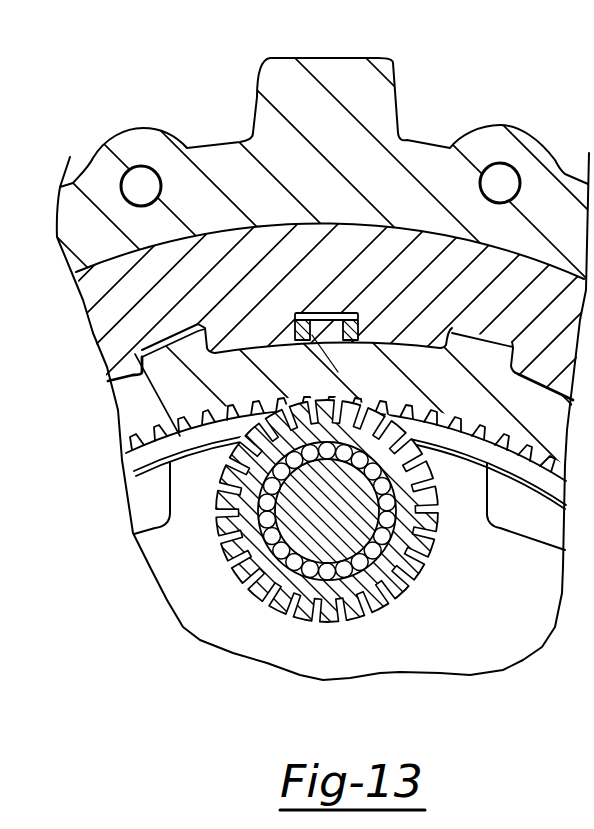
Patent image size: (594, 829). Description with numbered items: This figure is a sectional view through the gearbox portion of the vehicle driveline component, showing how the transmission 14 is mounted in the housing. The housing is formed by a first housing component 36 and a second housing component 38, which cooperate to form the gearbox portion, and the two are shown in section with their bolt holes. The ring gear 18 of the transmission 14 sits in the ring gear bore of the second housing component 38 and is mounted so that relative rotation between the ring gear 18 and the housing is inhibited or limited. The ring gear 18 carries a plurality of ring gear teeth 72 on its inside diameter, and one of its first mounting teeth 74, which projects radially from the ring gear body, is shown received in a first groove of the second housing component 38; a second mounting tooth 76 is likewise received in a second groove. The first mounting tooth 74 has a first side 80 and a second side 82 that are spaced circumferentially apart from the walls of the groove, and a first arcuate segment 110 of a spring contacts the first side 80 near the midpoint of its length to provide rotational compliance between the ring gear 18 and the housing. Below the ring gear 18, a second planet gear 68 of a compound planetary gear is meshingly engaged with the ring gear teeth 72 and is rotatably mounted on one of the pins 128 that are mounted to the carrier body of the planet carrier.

The transmission 14 is at (424, 627).
The ring gear 18 is at (140, 404).
The first housing component 36 is at (222, 168).
The second housing component 38 is at (113, 313).
The second planet gear 68 is at (288, 582).
The ring gear teeth 72 is at (557, 462).
The first mounting teeth 74 is at (328, 327).
The second mounting teeth 76 is at (481, 345).
The first side 80 is at (330, 330).
The second side 82 is at (321, 334).
The first arcuate segment 110 is at (294, 330).
The pins 128 is at (293, 507).